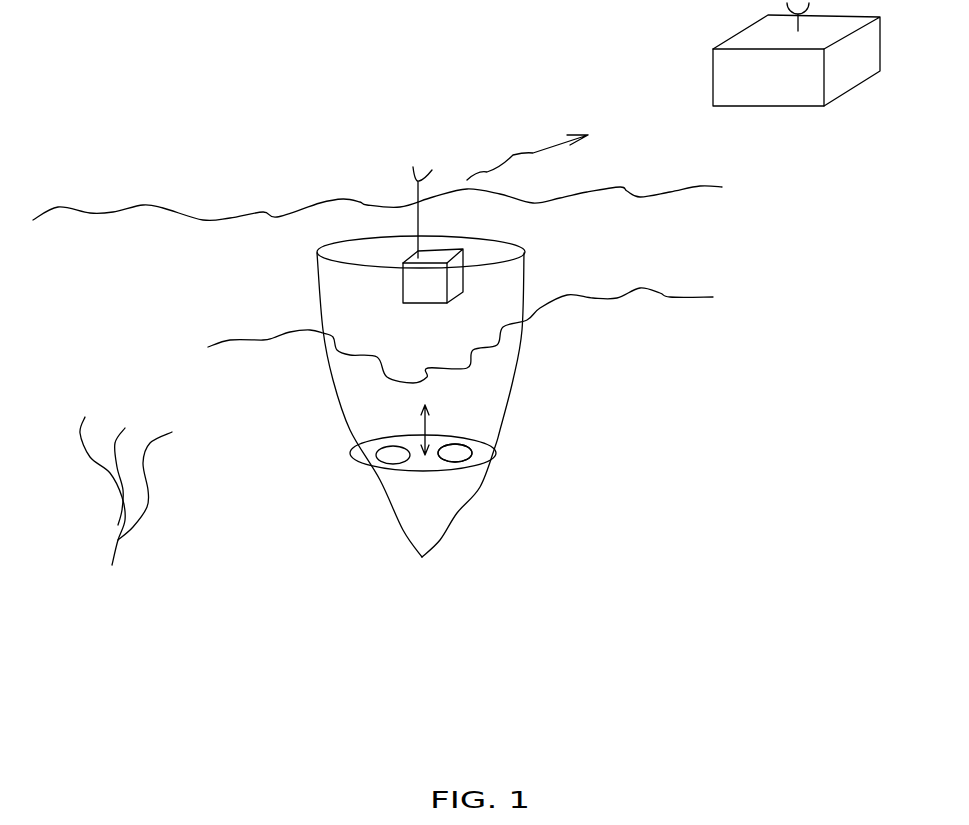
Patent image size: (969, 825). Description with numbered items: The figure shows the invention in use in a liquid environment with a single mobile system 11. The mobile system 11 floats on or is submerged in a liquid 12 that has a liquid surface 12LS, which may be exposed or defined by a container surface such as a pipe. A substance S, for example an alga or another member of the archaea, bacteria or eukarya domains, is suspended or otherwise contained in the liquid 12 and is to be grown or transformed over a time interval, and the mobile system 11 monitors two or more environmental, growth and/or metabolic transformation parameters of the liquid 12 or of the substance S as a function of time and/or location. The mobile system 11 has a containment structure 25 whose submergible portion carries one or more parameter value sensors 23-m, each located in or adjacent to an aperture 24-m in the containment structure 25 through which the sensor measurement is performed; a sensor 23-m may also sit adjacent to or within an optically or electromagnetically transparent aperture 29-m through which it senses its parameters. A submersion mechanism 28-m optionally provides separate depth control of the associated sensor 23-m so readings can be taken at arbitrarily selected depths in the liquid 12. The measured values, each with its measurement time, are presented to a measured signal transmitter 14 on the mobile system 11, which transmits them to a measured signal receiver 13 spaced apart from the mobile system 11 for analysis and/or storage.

The mobile system 11 is at (598, 259).
The liquid 12 is at (408, 313).
The liquid surface 12LS is at (166, 192).
The measured signal receiver 13 is at (726, 62).
The measured signal transmitter 14 is at (457, 263).
The parameter value sensor 23-m is at (482, 449).
The aperture 24-m is at (463, 453).
The containment structure 25 is at (517, 362).
The submersion mechanism 28-m is at (428, 423).
The optically or electromagnetically transparent aperture 29-m is at (546, 478).
The substance S is at (161, 490).